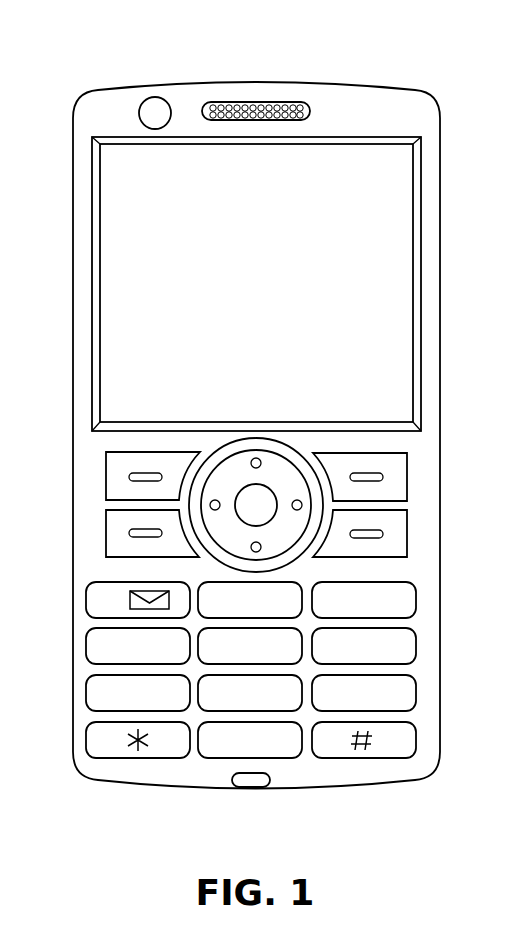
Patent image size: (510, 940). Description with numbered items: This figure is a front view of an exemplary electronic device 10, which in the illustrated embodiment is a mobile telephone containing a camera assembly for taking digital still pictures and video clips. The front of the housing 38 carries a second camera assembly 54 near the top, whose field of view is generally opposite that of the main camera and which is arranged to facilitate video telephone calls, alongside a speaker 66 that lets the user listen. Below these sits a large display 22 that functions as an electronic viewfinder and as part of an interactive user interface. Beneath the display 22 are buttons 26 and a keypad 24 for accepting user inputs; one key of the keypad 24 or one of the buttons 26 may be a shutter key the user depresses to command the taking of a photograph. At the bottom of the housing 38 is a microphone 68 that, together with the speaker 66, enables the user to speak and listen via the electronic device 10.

The electronic device 10 is at (84, 70).
The second camera assembly 54 is at (156, 110).
The speaker 66 is at (258, 102).
The display 22 is at (400, 201).
The buttons 26 is at (435, 503).
The keypad 24 is at (159, 778).
The microphone 68 is at (257, 784).
The housing 38 is at (363, 777).